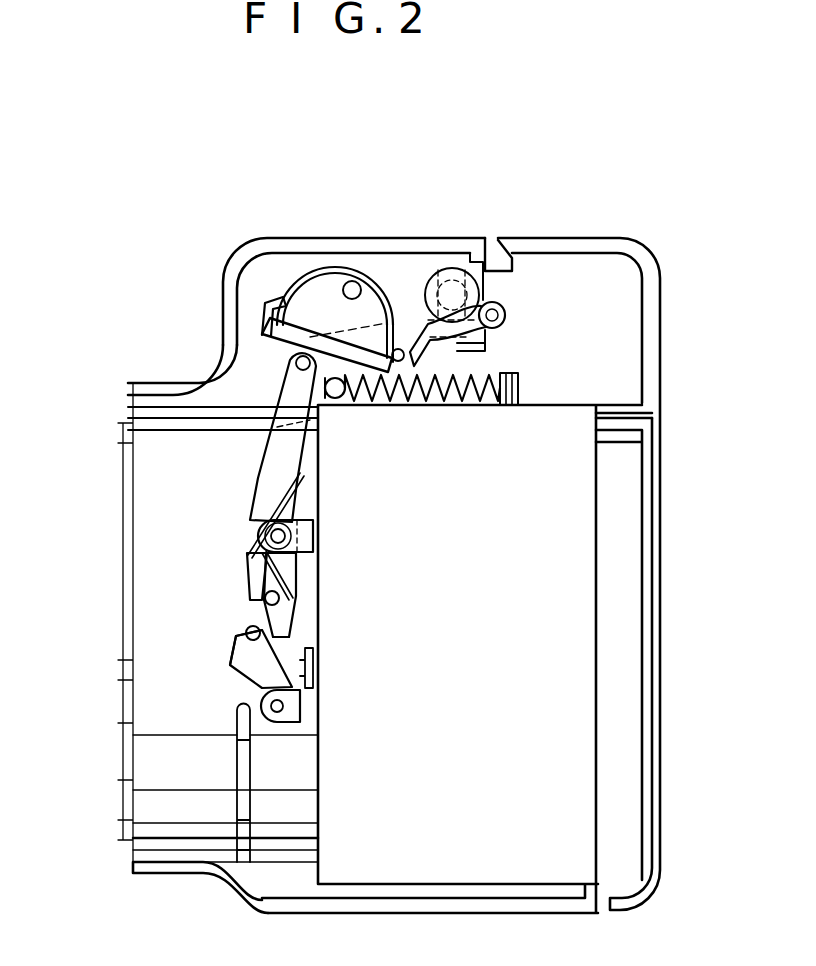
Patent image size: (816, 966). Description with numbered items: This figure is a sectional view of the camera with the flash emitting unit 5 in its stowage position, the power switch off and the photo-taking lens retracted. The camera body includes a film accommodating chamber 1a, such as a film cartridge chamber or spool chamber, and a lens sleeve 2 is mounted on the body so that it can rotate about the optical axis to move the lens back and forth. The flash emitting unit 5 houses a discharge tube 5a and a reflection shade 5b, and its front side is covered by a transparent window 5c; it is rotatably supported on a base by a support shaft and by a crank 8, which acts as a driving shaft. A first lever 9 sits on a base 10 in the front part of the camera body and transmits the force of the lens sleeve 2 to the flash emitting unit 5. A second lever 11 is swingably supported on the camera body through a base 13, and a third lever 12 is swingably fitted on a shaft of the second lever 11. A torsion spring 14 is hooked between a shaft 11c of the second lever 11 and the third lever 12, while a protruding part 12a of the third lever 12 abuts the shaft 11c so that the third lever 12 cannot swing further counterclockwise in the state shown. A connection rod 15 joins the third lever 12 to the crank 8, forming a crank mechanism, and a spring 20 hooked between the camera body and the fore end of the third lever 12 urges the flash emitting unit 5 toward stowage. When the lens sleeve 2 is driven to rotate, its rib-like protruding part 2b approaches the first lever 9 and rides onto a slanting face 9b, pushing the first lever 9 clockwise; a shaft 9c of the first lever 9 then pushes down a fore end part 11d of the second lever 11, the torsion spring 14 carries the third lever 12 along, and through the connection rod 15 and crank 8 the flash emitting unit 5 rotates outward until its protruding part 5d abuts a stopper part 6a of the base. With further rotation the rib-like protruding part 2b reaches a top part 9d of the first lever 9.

The film accommodating chamber 1a is at (588, 803).
The lens sleeve 2 is at (152, 769).
The rib-like protruding part 2b is at (245, 708).
The flash emitting unit 5 is at (400, 267).
The discharge tube 5a is at (352, 282).
The reflection shade 5b is at (327, 270).
The transparent window 5c is at (292, 337).
The protruding part 5d is at (487, 260).
The stopper part 6a is at (487, 345).
The crank 8 is at (500, 327).
The first lever 9 is at (270, 673).
The slanting face 9b is at (228, 675).
The shaft 9c is at (246, 630).
The top part 9d is at (229, 645).
The base 10 is at (302, 706).
The second lever 11 is at (288, 597).
The shaft 11c is at (293, 580).
The fore end part 11d is at (280, 621).
The third lever 12 is at (308, 432).
The protruding part 12a is at (258, 586).
The base 13 is at (305, 537).
The torsion spring 14 is at (262, 480).
The connection rod 15 is at (520, 330).
The spring 20 is at (470, 396).